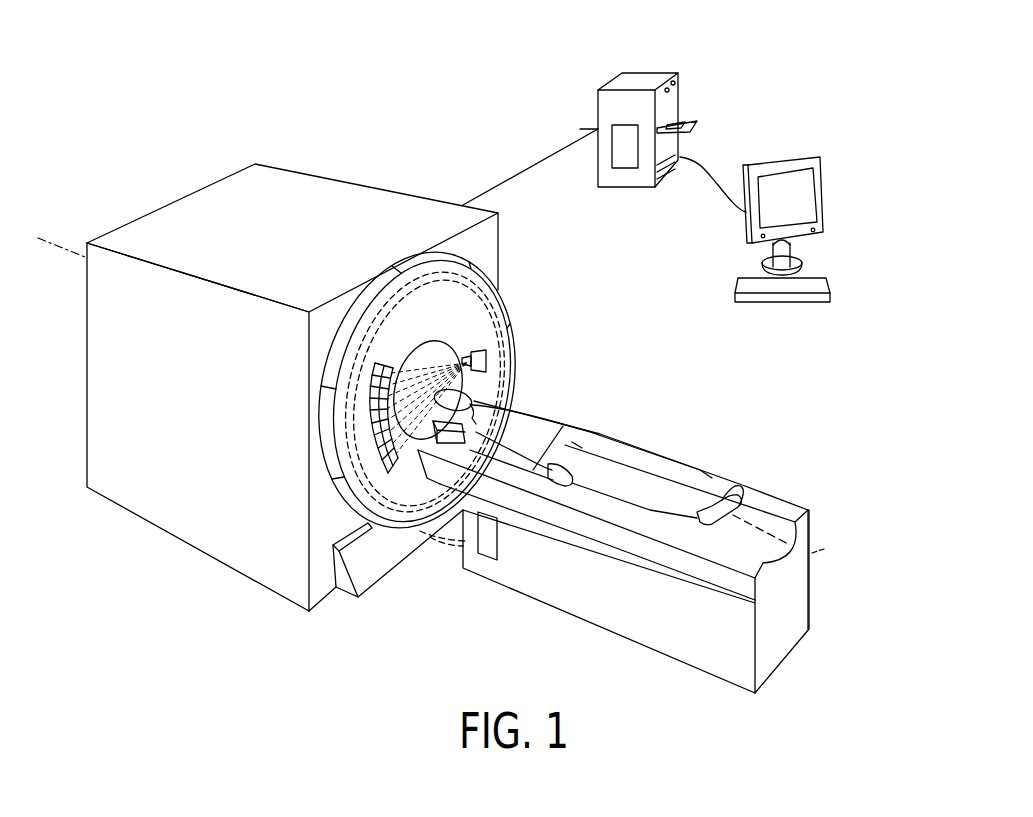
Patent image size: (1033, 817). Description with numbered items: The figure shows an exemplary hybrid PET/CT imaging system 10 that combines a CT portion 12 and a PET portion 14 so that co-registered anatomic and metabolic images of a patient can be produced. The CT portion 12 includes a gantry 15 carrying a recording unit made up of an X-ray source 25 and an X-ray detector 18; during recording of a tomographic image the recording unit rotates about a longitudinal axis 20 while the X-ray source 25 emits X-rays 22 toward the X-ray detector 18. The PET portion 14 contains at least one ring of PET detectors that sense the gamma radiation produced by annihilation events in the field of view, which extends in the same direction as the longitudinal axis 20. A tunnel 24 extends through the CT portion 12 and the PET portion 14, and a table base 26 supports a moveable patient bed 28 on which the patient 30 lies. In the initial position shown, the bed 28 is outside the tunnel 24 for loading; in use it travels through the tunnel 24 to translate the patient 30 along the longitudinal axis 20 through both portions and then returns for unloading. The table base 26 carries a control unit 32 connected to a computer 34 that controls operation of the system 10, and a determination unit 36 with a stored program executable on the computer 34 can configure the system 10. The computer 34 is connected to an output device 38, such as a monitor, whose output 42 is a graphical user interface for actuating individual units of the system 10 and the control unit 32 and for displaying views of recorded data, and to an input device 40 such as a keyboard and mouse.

The PET/CT imaging system 10 is at (868, 122).
The CT portion 12 is at (231, 540).
The PET portion 14 is at (115, 485).
The gantry 15 is at (328, 312).
The X-ray detector 18 is at (380, 490).
The longitudinal axis 20 is at (828, 545).
The X-rays 22 is at (452, 343).
The tunnel 24 is at (392, 398).
The X-ray source 25 is at (486, 358).
The table base 26 is at (600, 625).
The patient bed 28 is at (788, 510).
The patient 30 is at (530, 423).
The control unit 32 is at (488, 537).
The computer 34 is at (630, 83).
The determination unit 36 is at (623, 170).
The output device 38 is at (785, 158).
The input device 40 is at (780, 298).
The output 42 is at (748, 226).